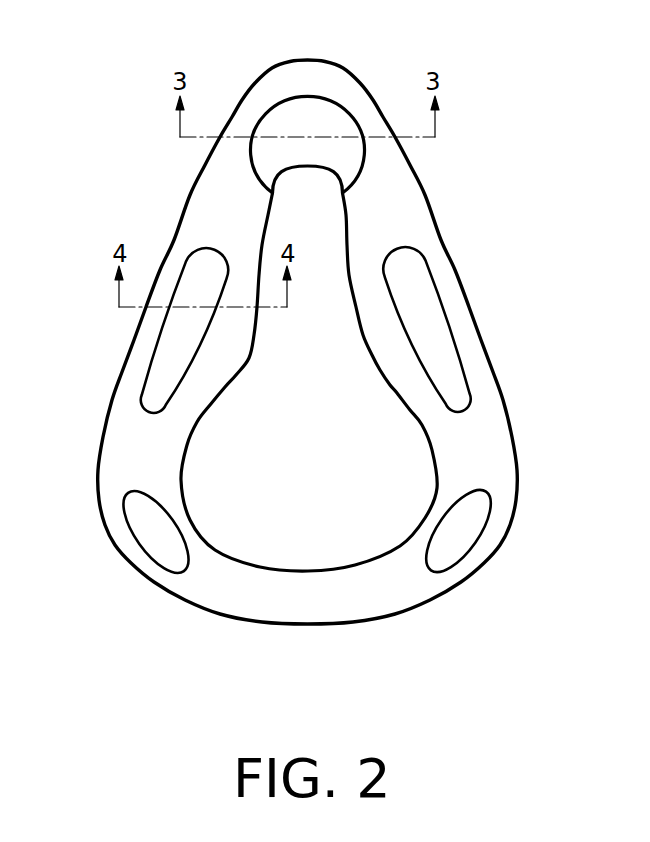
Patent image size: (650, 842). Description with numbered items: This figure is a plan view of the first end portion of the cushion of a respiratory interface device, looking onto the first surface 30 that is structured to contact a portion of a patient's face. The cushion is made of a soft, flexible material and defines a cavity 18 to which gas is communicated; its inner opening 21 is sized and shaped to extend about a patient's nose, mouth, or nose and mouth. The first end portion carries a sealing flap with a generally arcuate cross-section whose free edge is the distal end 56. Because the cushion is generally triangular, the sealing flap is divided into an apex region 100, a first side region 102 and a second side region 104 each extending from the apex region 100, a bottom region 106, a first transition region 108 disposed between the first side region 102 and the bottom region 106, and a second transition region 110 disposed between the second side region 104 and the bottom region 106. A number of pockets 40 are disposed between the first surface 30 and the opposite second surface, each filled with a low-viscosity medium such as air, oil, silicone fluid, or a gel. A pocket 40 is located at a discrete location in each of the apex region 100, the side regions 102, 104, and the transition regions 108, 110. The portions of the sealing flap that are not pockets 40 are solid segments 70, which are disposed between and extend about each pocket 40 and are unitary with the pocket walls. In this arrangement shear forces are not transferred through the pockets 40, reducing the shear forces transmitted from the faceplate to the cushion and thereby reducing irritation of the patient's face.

The cavity 18 is at (336, 390).
The inner opening 21 is at (375, 460).
The first surface 30 is at (212, 223).
The pocket 40 is at (319, 118).
The distal end 56 is at (247, 358).
The solid segment 70 is at (218, 193).
The apex region 100 is at (289, 118).
The first side region 102 is at (152, 327).
The second side region 104 is at (463, 347).
The bottom region 106 is at (345, 600).
The first transition region 108 is at (110, 512).
The second transition region 110 is at (455, 537).